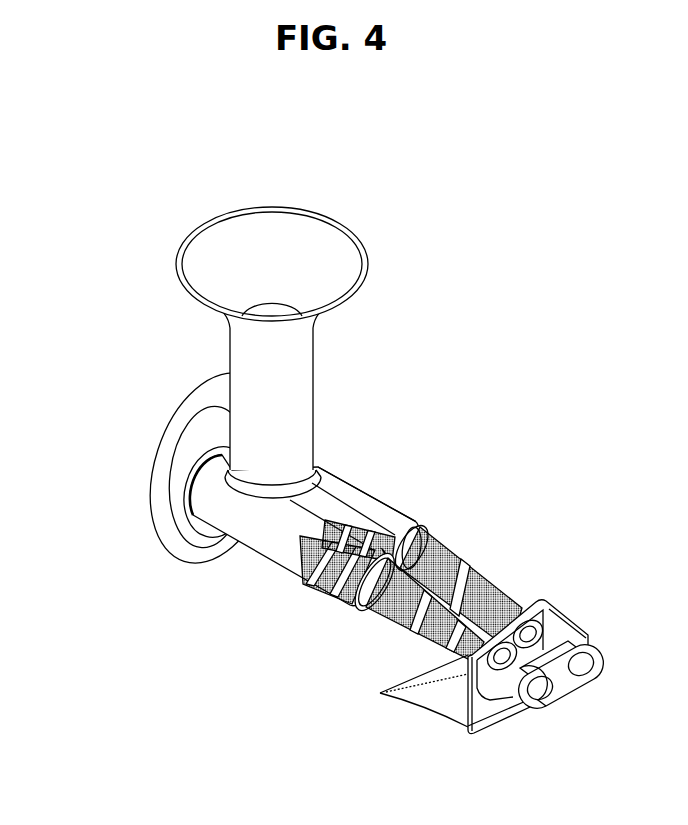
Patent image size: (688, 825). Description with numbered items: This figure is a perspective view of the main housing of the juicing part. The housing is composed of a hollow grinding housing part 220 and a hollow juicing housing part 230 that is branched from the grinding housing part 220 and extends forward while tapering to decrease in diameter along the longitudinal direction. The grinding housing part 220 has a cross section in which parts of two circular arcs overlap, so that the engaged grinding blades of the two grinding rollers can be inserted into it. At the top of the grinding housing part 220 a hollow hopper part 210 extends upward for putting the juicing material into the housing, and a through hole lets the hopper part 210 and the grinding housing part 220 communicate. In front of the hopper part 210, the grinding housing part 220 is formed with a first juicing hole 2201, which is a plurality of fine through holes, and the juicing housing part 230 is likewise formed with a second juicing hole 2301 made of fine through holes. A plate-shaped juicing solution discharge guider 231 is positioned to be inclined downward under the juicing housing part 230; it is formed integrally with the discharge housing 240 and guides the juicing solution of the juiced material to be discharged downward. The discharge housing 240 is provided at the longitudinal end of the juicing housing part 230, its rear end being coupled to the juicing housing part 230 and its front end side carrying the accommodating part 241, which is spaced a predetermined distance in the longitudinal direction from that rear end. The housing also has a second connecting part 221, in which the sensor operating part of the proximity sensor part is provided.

The hopper part 210 is at (272, 207).
The grinding housing part 220 is at (349, 483).
The first juicing hole 2201 is at (388, 500).
The second connecting part 221 is at (148, 513).
The juicing housing part 230 is at (416, 561).
The second juicing hole 2301 is at (443, 548).
The juicing solution discharge guider 231 is at (427, 694).
The discharge housing 240 is at (564, 618).
The accommodating part 241 is at (574, 692).